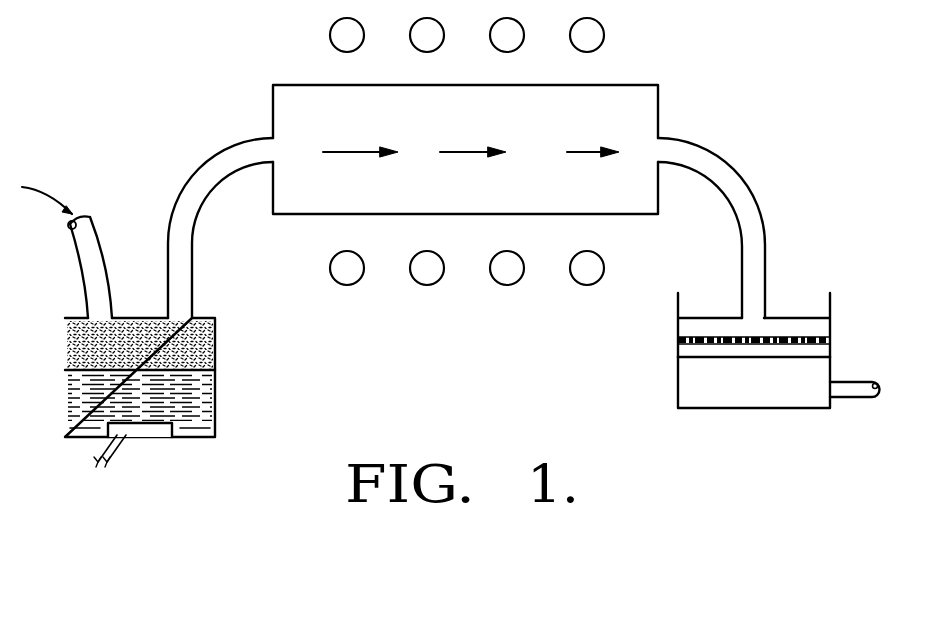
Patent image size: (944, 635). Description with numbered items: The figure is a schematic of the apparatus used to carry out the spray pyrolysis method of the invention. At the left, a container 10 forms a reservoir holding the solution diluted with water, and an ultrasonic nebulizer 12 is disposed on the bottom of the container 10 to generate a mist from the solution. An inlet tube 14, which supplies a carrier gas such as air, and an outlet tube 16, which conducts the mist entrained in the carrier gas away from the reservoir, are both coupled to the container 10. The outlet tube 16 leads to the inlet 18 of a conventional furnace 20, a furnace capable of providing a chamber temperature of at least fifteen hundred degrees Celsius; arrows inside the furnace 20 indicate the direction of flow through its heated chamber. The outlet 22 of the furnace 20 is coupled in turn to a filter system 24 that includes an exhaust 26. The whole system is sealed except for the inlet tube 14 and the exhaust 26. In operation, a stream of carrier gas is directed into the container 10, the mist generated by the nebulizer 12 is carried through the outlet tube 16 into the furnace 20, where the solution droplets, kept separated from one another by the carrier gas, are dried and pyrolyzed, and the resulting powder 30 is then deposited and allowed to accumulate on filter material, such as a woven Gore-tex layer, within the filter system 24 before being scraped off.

The container 10 is at (213, 398).
The ultrasonic nebulizer 12 is at (162, 432).
The inlet tube 14 is at (92, 262).
The outlet tube 16 is at (180, 280).
The inlet 18 is at (270, 152).
The furnace 20 is at (300, 83).
The outlet 22 is at (740, 185).
The filter system 24 is at (692, 380).
The exhaust 26 is at (855, 390).
The powder 30 is at (815, 335).